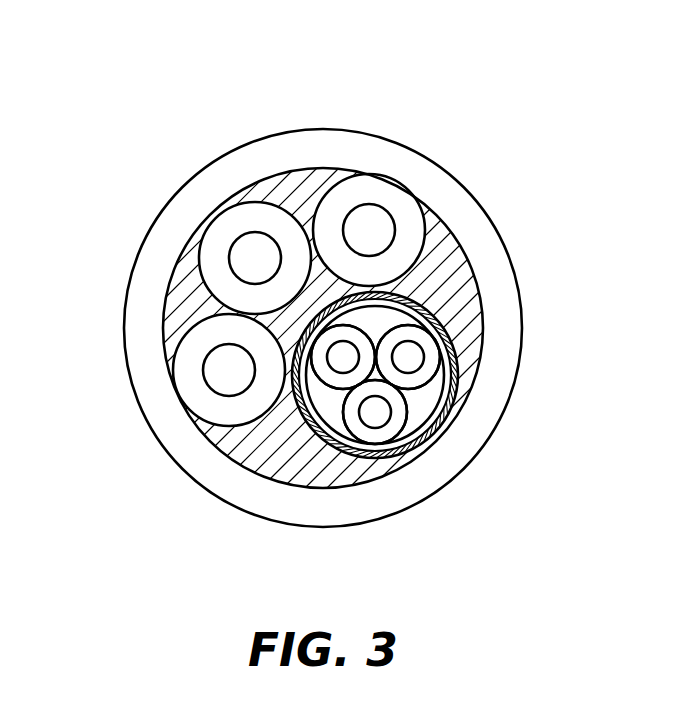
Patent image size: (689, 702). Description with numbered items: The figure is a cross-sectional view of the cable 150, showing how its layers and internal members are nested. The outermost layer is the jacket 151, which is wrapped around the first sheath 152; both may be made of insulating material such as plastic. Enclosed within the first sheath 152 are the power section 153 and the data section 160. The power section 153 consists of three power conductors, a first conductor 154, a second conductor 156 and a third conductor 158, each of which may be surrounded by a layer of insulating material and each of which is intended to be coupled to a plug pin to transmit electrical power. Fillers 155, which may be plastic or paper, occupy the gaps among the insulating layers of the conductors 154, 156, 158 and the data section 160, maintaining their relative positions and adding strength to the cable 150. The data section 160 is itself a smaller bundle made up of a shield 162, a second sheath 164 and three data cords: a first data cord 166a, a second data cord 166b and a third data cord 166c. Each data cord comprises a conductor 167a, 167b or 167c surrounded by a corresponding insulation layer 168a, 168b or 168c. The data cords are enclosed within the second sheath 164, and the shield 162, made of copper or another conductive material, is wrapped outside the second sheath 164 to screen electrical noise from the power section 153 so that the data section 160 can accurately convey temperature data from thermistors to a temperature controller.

The cable 150 is at (126, 60).
The jacket 151 is at (200, 178).
The first sheath 152 is at (293, 166).
The power section 153 is at (397, 210).
The first conductor 154 is at (222, 368).
The fillers 155 is at (467, 283).
The second conductor 156 is at (250, 256).
The third conductor 158 is at (372, 226).
The data section 160 is at (277, 423).
The shield 162 is at (425, 312).
The second sheath 164 is at (445, 385).
The first data cord 166a is at (325, 368).
The conductor 167a is at (343, 357).
The insulation layer 168a is at (318, 412).
The second data cord 166b is at (427, 348).
The conductor 167b is at (410, 365).
The insulation layer 168b is at (402, 412).
The third data cord 166c is at (420, 432).
The conductor 167c is at (376, 414).
The insulation layer 168c is at (440, 418).